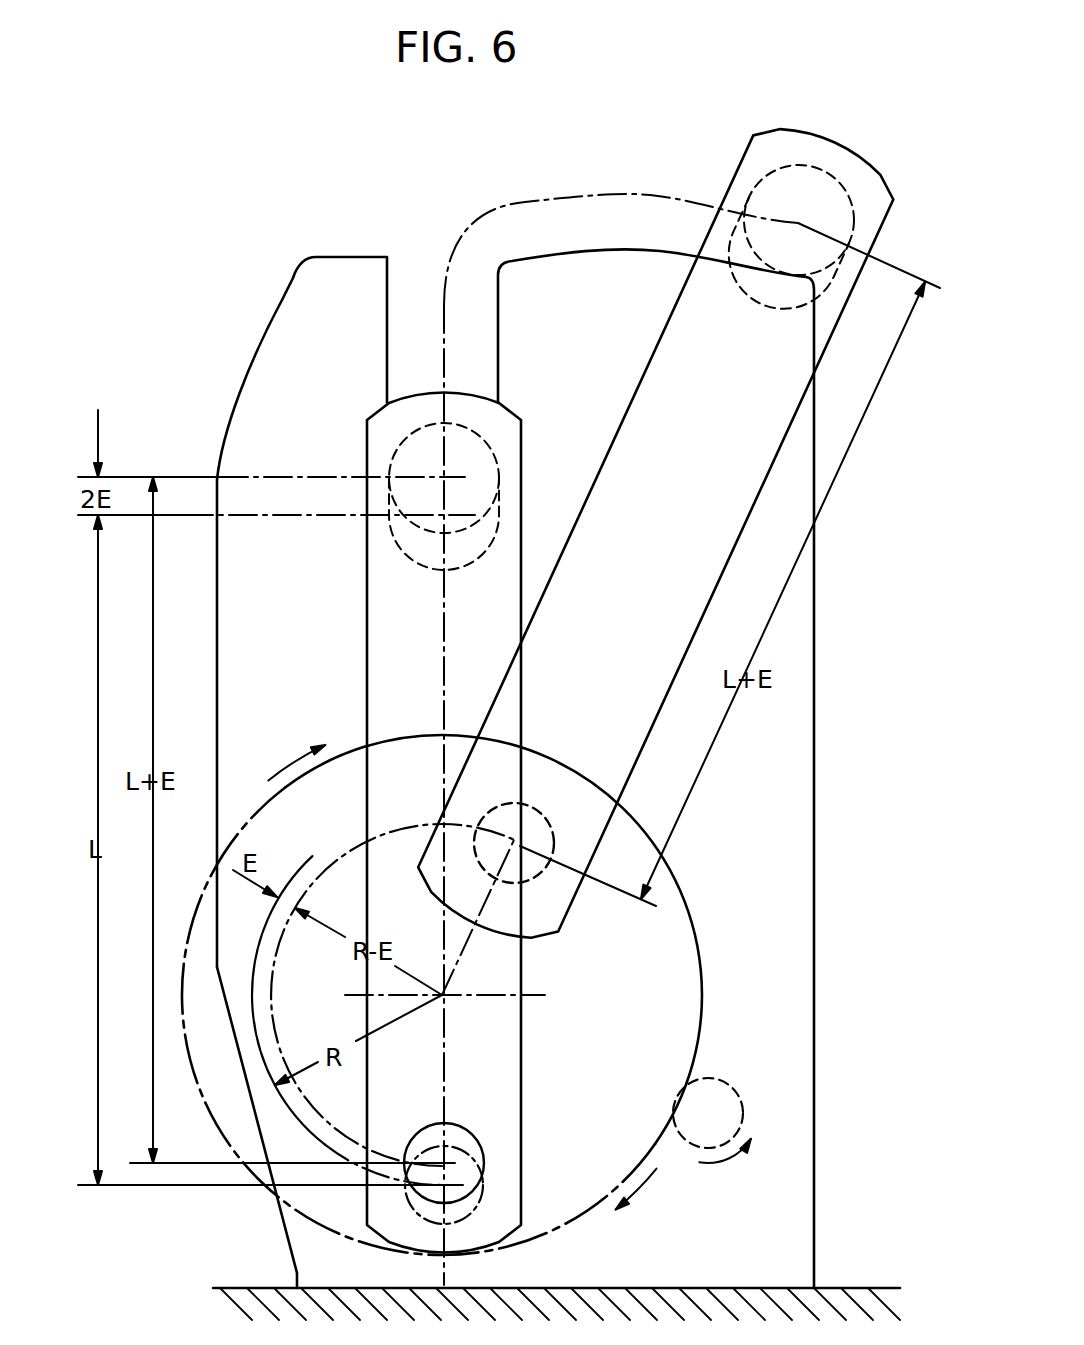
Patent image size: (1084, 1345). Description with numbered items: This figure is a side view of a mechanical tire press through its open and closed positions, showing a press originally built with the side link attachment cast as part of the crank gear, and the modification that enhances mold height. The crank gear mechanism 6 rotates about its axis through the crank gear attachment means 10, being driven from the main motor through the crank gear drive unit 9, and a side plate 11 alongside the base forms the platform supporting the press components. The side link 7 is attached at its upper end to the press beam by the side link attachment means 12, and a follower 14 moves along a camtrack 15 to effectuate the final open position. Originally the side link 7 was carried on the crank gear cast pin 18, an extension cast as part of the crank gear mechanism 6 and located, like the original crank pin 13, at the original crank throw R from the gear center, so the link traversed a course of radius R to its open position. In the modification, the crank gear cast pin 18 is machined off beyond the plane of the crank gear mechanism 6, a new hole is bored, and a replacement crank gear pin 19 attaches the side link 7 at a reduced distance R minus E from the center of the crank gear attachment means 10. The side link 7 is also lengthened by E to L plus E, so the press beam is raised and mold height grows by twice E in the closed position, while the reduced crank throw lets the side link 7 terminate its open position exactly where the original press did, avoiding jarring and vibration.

The crank gear mechanism 6 is at (700, 1000).
The side link 7 is at (367, 452).
The crank gear drive unit 9 is at (743, 1103).
The crank gear attachment means 10 is at (446, 998).
The side plate 11 is at (293, 283).
The side link attachment means 12 is at (446, 476).
The original crank pin 13 is at (447, 1187).
The follower 14 is at (418, 433).
The camtrack 15 is at (390, 287).
The crank gear cast pin 18 is at (485, 1176).
The crank gear pin 19 is at (468, 1132).